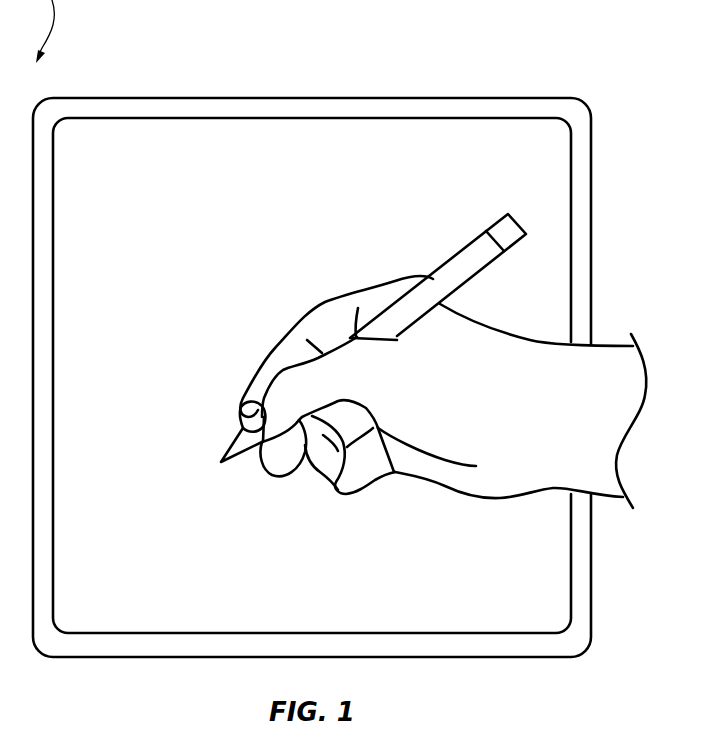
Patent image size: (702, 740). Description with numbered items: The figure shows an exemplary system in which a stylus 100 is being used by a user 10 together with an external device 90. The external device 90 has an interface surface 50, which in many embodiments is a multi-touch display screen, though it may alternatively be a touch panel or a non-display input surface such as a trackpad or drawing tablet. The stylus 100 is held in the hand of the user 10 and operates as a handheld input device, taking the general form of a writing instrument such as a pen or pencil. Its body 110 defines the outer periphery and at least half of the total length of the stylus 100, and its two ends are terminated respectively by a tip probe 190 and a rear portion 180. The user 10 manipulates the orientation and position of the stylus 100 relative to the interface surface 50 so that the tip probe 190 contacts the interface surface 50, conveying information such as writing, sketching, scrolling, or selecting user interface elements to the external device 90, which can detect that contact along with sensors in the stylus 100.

The user 10 is at (521, 335).
The interface surface 50 is at (427, 118).
The external device 90 is at (310, 98).
The stylus 100 is at (335, 306).
The body 110 is at (433, 273).
The rear portion 180 is at (485, 233).
The tip probe 190 is at (231, 451).